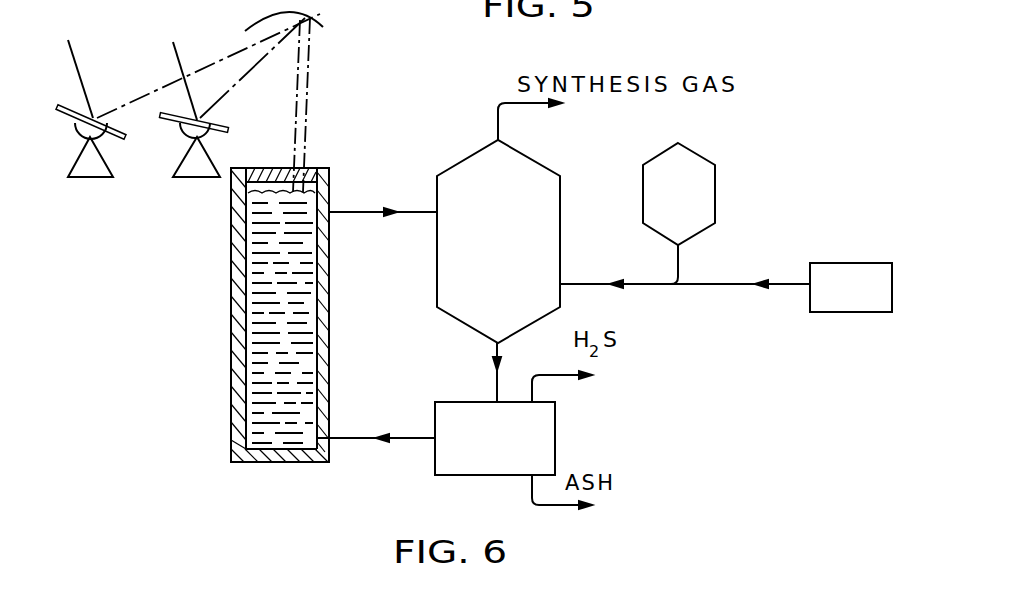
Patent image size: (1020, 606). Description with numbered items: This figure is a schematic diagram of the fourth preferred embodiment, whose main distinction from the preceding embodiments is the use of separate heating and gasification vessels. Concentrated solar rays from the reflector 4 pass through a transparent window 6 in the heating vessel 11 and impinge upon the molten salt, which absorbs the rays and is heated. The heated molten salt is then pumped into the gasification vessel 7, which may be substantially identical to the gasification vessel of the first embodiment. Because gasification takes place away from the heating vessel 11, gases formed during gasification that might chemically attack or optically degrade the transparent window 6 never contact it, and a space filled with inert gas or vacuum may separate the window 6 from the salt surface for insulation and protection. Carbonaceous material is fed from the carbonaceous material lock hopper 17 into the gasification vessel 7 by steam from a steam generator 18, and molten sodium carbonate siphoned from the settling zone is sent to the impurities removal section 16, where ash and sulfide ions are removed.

The reflector 4 is at (305, 18).
The transparent window 6 is at (306, 170).
The gasification vessel 7 is at (542, 166).
The heating vessel 11 is at (232, 218).
The impurities removal section 16 is at (435, 453).
The carbonaceous material lock hopper 17 is at (694, 152).
The steam generator 18 is at (810, 298).